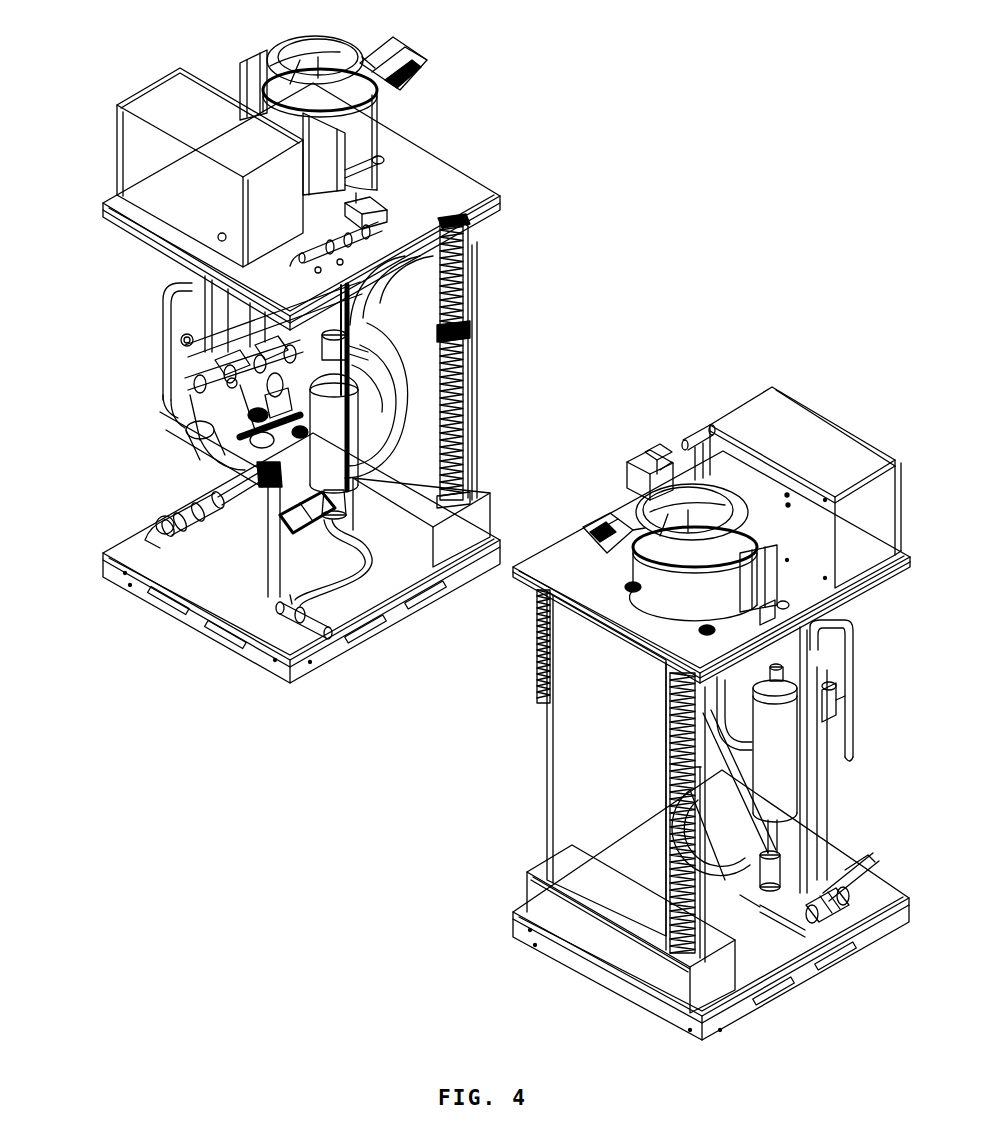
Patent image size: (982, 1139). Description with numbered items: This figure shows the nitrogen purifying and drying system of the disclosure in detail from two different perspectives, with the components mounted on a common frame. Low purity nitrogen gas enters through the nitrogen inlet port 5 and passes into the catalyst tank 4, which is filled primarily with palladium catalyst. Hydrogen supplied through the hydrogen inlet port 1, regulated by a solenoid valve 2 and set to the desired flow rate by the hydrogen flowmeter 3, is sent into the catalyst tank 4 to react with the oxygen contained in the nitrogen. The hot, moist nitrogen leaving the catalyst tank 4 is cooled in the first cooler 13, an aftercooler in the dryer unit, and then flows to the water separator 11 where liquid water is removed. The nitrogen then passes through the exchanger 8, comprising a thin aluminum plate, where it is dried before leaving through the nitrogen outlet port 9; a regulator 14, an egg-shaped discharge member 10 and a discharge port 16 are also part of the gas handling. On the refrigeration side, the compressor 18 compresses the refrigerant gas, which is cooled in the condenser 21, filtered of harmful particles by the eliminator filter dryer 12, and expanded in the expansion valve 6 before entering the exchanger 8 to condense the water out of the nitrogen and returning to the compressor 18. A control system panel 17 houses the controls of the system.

The hydrogen inlet port 1 is at (378, 250).
The solenoid valve 2 is at (393, 210).
The hydrogen flowmeter 3 is at (343, 150).
The catalyst tank 4 is at (800, 710).
The nitrogen inlet port 5 is at (330, 527).
The expansion valve 6 is at (830, 700).
The exchanger 8 is at (195, 284).
The nitrogen outlet port 9 is at (362, 400).
The egg-shaped discharge member 10 is at (263, 463).
The water separator 11 is at (365, 453).
The eliminator filter dryer 12 is at (180, 507).
The first cooler 13 is at (457, 335).
The regulator 14 is at (267, 467).
The discharge port 16 is at (280, 620).
The control system panel 17 is at (110, 130).
The compressor 18 is at (370, 57).
The condenser 21 is at (582, 834).